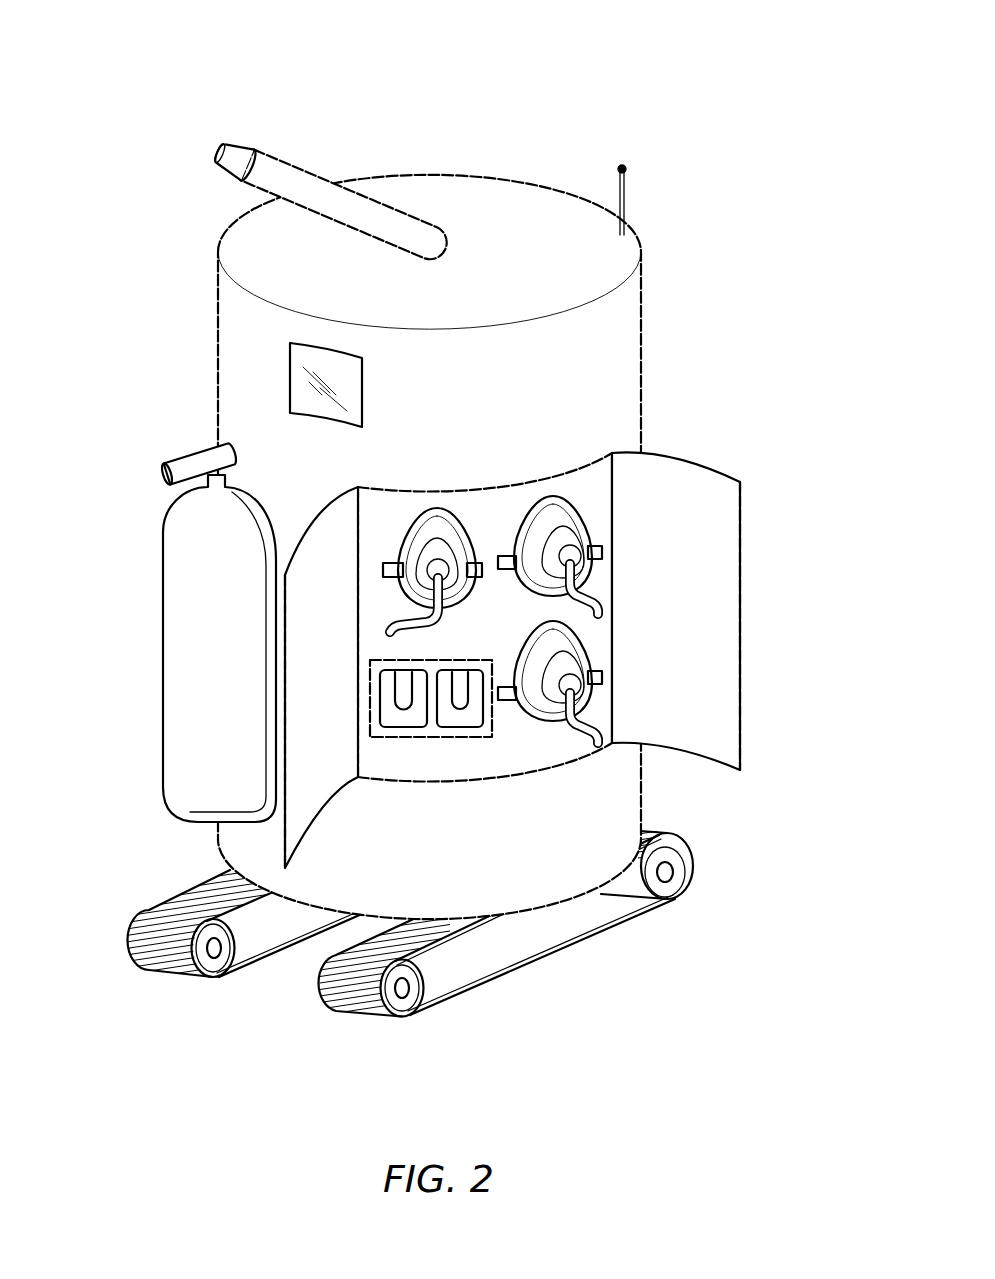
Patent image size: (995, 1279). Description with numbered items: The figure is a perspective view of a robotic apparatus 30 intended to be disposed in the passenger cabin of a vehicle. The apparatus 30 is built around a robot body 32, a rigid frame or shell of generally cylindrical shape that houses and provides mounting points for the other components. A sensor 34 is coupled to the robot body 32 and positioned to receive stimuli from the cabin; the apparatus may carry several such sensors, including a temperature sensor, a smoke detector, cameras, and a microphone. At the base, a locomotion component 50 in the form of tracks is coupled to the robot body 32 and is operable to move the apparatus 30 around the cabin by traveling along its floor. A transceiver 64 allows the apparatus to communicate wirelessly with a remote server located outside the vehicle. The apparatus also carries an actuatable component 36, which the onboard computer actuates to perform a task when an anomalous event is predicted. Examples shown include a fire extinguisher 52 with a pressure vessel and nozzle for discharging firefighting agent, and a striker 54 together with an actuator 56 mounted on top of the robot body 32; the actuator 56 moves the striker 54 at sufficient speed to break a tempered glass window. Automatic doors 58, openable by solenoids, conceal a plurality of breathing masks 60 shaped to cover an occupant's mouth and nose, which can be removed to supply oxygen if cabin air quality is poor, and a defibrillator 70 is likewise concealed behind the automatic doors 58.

The apparatus 30 is at (444, 534).
The robot body 32 is at (610, 369).
The sensor 34 is at (288, 362).
The actuatable component 36 is at (295, 161).
The locomotion component 50 is at (507, 977).
The fire extinguisher 52 is at (188, 452).
The striker 54 is at (212, 152).
The actuator 56 is at (385, 220).
The automatic doors 58 is at (320, 812).
The breathing masks 60 is at (517, 660).
The transceiver 64 is at (626, 198).
The defibrillator 70 is at (412, 735).